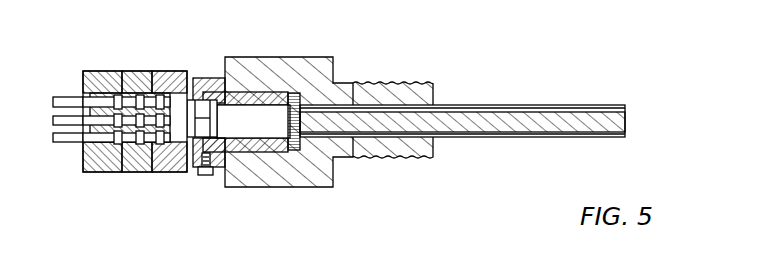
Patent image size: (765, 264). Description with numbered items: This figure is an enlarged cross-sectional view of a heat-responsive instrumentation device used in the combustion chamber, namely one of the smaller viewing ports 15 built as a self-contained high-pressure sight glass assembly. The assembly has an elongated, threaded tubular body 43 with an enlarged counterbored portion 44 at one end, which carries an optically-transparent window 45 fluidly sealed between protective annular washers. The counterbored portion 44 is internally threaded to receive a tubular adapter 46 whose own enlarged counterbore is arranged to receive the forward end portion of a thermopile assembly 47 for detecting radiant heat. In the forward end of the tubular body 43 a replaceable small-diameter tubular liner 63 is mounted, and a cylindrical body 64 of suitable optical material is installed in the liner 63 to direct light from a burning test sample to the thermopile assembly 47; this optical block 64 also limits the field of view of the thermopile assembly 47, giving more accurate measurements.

The smaller viewing port 15 is at (135, 57).
The threaded tubular body 43 is at (378, 75).
The enlarged counterbored portion 44 is at (313, 186).
The optically-transparent window 45 is at (296, 151).
The tubular adapter 46 is at (212, 77).
The thermopile assembly 47 is at (189, 147).
The small-diameter tubular liner 63 is at (435, 105).
The cylindrical body of optical material 64 is at (552, 132).